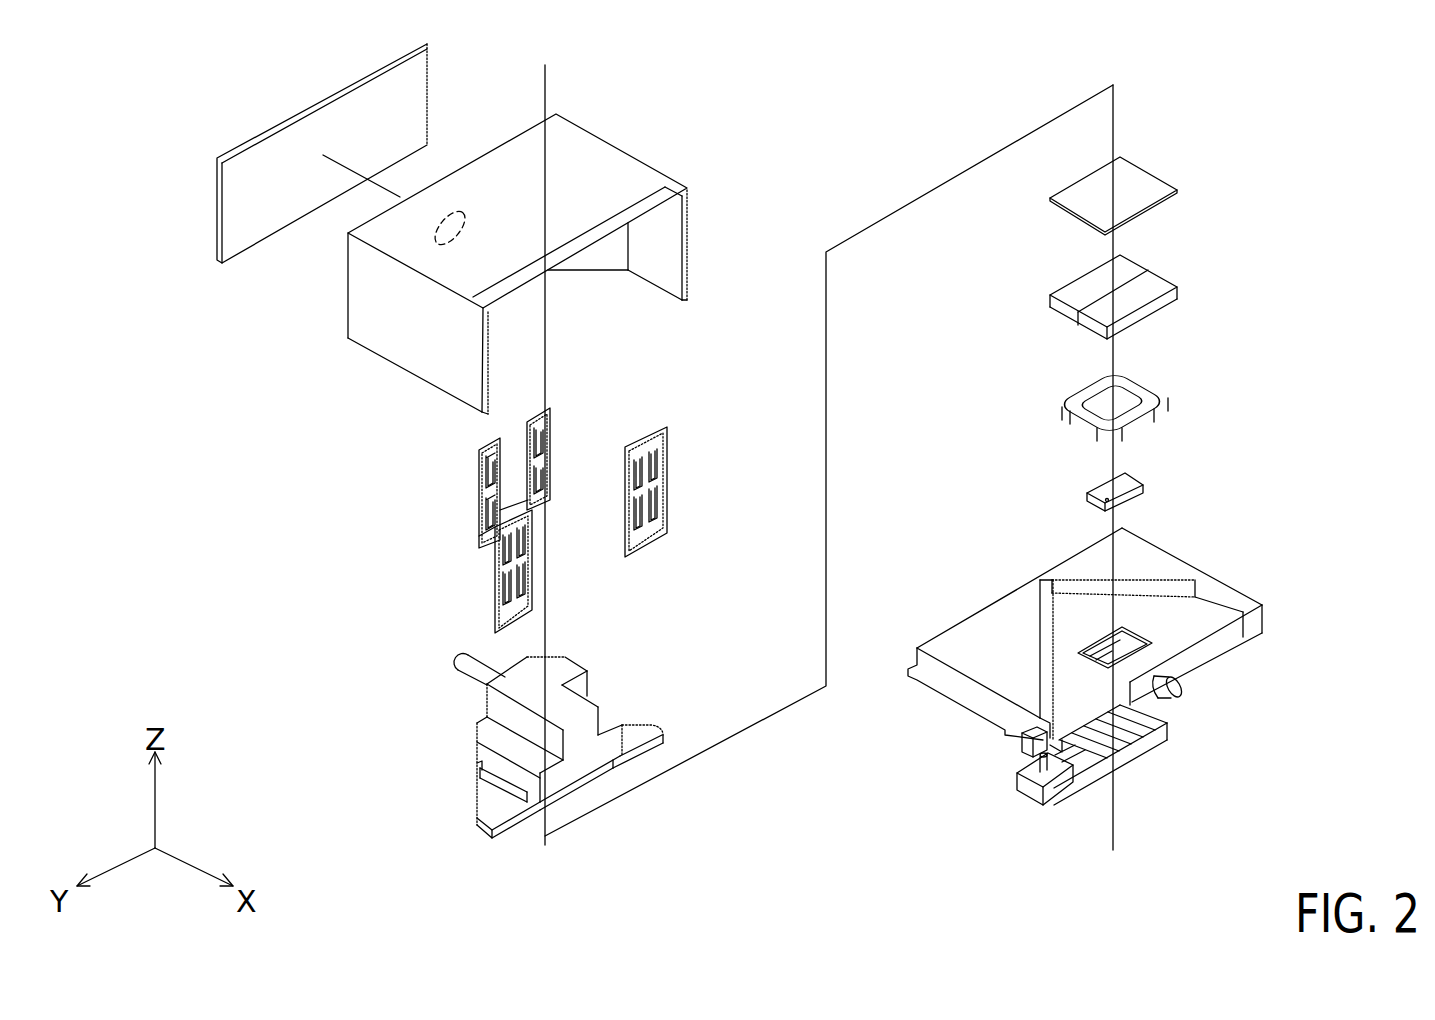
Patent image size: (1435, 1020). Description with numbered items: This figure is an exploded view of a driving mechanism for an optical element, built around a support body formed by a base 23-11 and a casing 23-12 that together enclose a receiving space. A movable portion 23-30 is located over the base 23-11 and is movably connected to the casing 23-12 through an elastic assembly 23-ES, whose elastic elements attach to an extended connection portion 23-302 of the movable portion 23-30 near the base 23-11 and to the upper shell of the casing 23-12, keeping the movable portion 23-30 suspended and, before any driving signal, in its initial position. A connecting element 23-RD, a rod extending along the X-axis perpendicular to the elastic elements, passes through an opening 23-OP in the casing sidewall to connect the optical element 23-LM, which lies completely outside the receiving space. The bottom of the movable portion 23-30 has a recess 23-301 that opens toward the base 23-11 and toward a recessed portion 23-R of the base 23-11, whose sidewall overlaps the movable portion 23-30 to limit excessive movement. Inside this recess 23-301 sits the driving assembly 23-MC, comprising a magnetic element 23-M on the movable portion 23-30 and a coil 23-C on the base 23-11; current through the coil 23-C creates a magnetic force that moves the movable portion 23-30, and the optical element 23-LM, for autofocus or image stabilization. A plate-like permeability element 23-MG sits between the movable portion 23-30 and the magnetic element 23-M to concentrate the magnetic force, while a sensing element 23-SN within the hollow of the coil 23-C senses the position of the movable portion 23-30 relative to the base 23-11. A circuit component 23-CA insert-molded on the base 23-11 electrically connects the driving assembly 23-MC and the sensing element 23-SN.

The optical element 23-LM is at (337, 130).
The opening 23-OP is at (446, 220).
The casing 23-12 is at (408, 338).
The elastic assembly 23-ES is at (465, 541).
The connecting element 23-RD is at (470, 662).
The movable portion 23-30 is at (488, 808).
The recess 23-301 is at (580, 778).
The extended connection portion 23-302 is at (508, 822).
The magnetic permeable plate 23-MG is at (1137, 200).
The magnetic element 23-M is at (1140, 318).
The driving assembly 23-MC is at (1298, 300).
The coil 23-C is at (1148, 412).
The sensor 23-SN is at (1130, 505).
The recessed portion 23-R is at (1042, 660).
The base 23-11 is at (1215, 650).
The circuit component 23-CA is at (1057, 777).